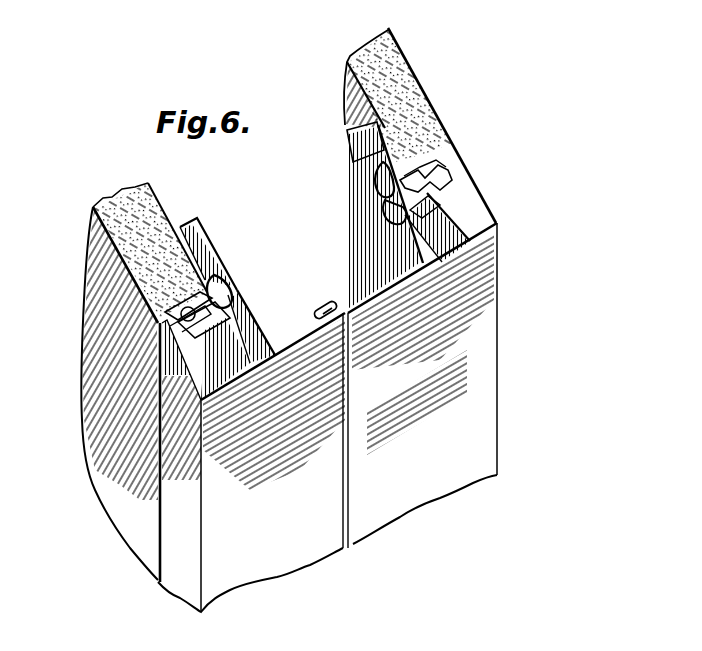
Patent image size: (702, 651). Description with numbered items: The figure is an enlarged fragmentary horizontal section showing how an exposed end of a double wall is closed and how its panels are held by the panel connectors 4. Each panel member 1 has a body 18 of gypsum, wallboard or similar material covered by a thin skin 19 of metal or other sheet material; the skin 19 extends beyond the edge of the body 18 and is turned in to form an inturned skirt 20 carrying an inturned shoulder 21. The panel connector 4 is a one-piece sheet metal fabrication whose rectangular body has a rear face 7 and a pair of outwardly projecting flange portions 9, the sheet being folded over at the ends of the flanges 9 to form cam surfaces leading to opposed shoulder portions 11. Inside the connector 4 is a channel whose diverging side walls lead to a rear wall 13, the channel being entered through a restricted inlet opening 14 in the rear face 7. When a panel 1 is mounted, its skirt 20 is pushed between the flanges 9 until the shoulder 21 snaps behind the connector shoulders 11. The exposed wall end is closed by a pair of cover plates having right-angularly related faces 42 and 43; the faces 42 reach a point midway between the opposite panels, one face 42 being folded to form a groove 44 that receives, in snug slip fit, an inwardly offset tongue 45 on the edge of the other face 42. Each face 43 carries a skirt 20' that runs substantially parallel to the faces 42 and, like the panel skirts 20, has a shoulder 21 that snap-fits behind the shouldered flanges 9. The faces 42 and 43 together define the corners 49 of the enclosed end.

The panel member 1 is at (124, 540).
The panel connector 4 is at (183, 225).
The rear face 7 is at (248, 316).
The flange portion 9 is at (430, 143).
The shoulder portion 11 is at (457, 178).
The rear wall 13 is at (380, 182).
The restricted inlet opening 14 is at (232, 284).
The panel body 18 is at (147, 265).
The skin 19 is at (106, 231).
The inturned skirt 20 is at (137, 317).
The skirt 20' is at (464, 158).
The inturned shoulder 21 is at (185, 322).
The cover plate face 42 is at (335, 547).
The cover plate face 43 is at (177, 583).
The groove 44 is at (326, 318).
The tongue 45 is at (334, 303).
The corner 49 is at (476, 222).